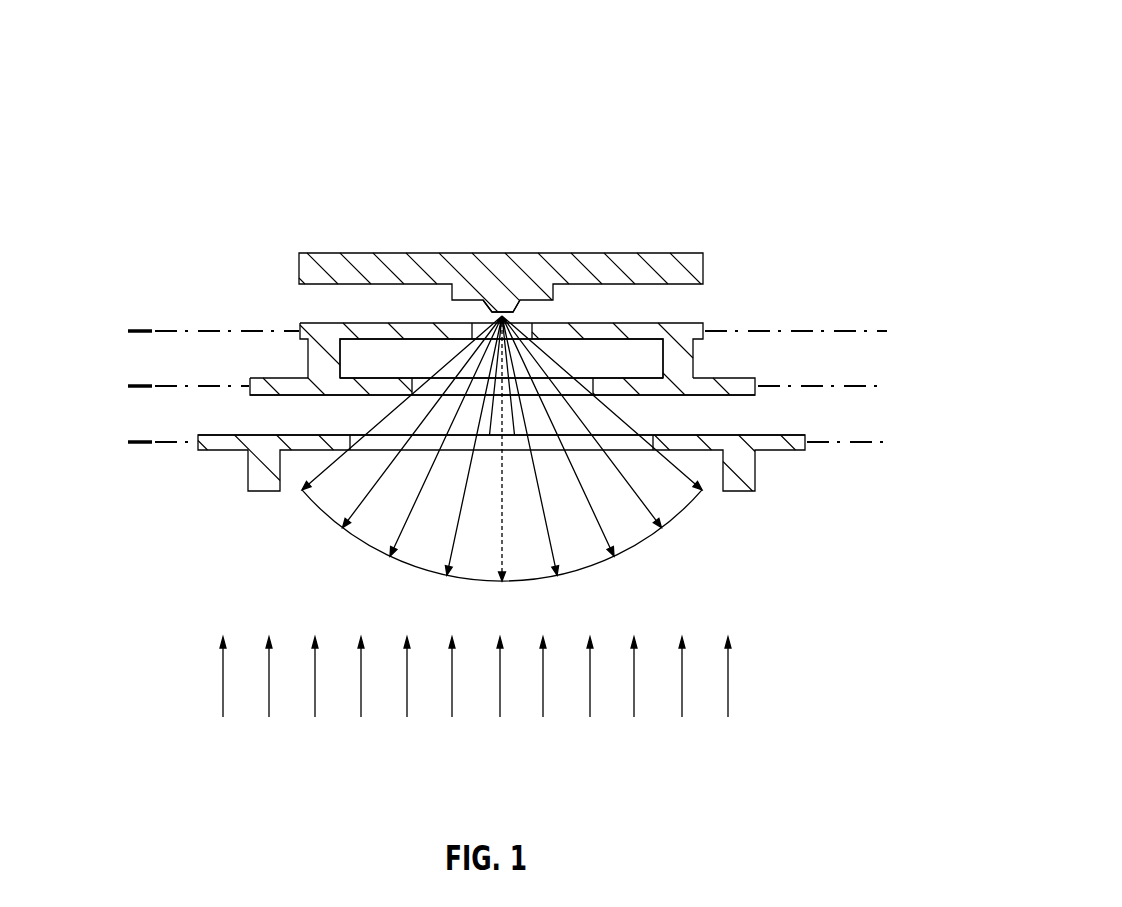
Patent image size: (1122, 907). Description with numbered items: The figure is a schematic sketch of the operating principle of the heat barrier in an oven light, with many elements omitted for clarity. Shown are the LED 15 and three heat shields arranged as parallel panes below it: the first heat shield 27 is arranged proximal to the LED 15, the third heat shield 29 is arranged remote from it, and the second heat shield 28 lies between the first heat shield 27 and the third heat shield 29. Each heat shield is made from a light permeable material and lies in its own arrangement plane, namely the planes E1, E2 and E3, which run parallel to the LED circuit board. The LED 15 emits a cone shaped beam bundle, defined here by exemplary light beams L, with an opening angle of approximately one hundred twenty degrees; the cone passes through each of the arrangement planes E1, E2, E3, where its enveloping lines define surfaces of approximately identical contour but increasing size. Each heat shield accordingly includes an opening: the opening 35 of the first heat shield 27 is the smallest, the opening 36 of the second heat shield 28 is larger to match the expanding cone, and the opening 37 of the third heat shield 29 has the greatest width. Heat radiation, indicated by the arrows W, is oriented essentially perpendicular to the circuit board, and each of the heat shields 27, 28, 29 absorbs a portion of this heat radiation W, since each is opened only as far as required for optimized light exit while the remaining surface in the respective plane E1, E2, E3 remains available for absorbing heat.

The LED 15 is at (730, 126).
The first heat shield 27 is at (706, 344).
The second heat shield 28 is at (762, 400).
The third heat shield 29 is at (807, 460).
The opening 35 is at (525, 317).
The opening 36 is at (581, 372).
The opening 37 is at (644, 418).
The arrangement plane E1 is at (142, 329).
The arrangement plane E2 is at (142, 384).
The arrangement plane E3 is at (142, 440).
The light beams L is at (502, 548).
The heat radiation W is at (500, 683).